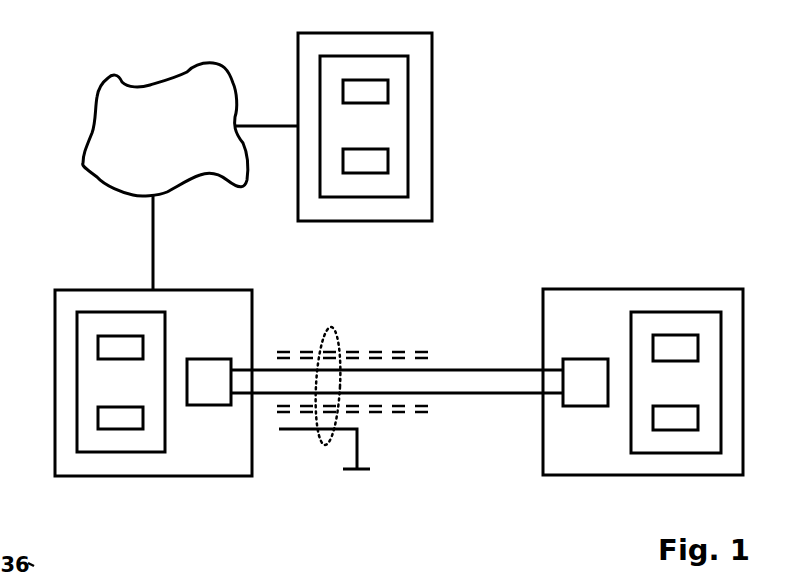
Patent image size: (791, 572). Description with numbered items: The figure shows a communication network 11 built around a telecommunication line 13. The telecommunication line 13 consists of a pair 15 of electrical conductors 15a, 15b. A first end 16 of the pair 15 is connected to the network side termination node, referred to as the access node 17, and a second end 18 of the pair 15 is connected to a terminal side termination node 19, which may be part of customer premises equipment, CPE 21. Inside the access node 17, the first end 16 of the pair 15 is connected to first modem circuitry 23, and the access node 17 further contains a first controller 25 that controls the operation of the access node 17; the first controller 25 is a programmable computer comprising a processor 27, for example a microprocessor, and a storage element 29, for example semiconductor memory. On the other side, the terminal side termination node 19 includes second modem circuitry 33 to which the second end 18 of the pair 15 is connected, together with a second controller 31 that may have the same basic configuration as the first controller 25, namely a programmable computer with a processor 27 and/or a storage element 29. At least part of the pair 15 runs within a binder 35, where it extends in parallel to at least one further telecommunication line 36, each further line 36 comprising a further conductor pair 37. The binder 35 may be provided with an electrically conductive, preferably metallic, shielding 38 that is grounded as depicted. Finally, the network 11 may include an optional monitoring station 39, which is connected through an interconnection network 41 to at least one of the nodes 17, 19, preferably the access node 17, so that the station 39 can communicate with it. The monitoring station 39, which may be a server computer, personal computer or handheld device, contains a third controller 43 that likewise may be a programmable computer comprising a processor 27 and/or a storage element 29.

The communication network 11 is at (79, 49).
The interconnection network 41 is at (180, 74).
The monitoring station 39 is at (432, 185).
The third controller 43 is at (407, 117).
The processor 27 is at (388, 91).
The storage element 29 is at (388, 157).
The access node 17 is at (205, 290).
The first controller 25 is at (123, 312).
The first modem circuitry 23 is at (222, 405).
The terminal side termination node 19 is at (572, 289).
The second controller 31 is at (705, 312).
The second modem circuitry 33 is at (598, 406).
The customer premises equipment 21 is at (628, 180).
The telecommunication line 13 is at (417, 274).
The pair of electrical conductors 15 is at (397, 441).
The electrical conductor 15a is at (518, 370).
The electrical conductor 15b is at (527, 393).
The further conductor pair 37 is at (439, 346).
The binder 35 is at (337, 328).
The shielding 38 is at (357, 445).
The first end 16 is at (285, 305).
The further telecommunication line 36 is at (481, 328).
The second end 18 is at (528, 268).